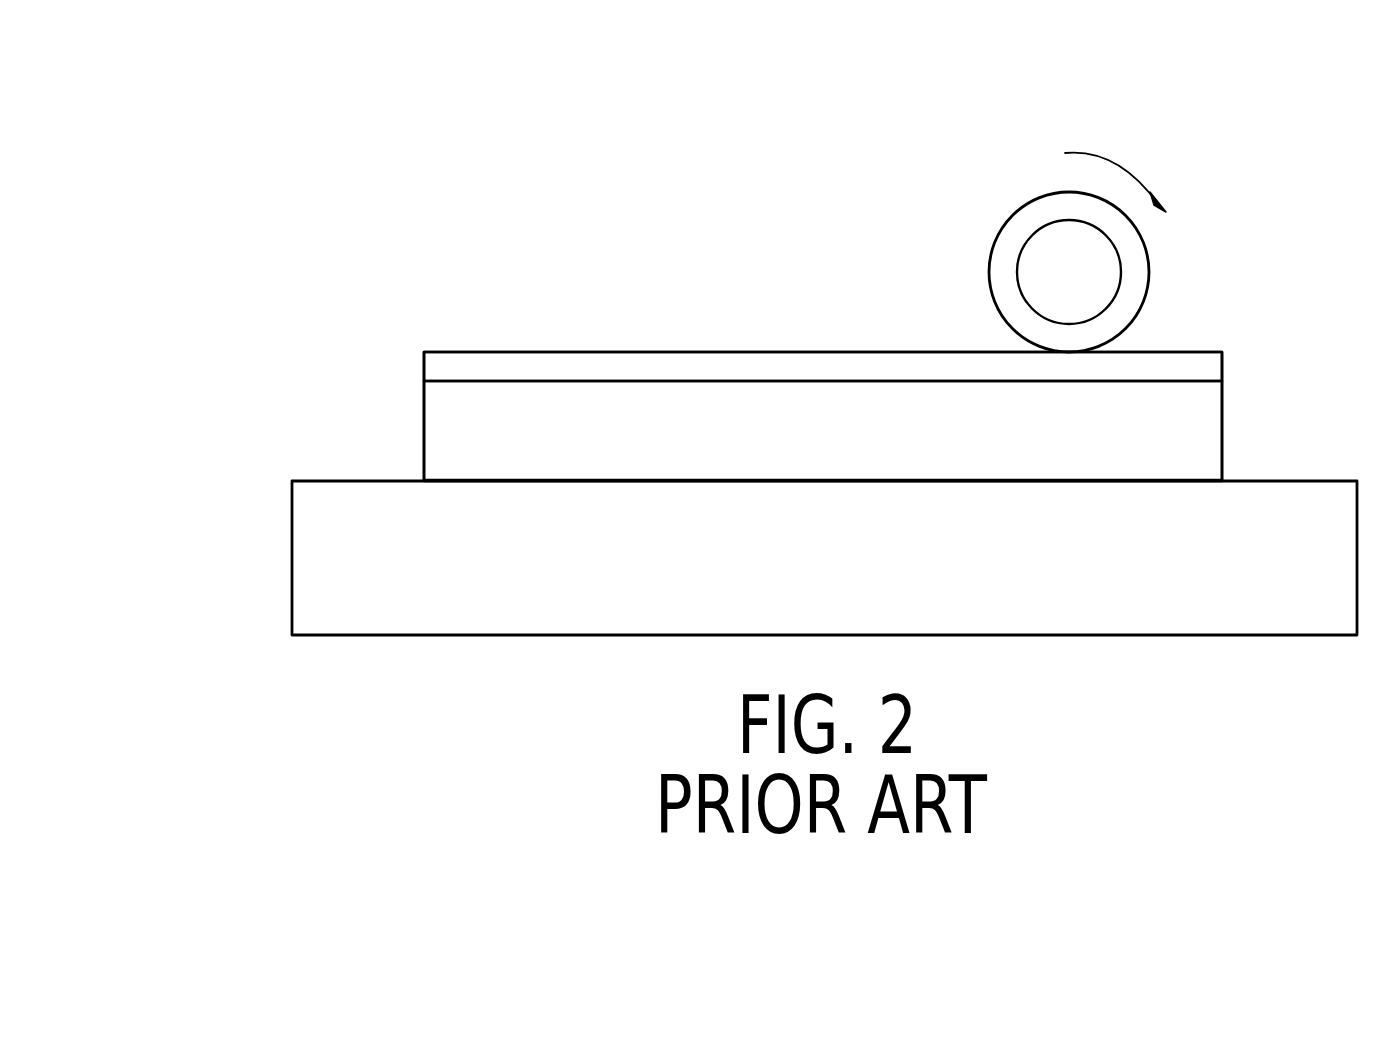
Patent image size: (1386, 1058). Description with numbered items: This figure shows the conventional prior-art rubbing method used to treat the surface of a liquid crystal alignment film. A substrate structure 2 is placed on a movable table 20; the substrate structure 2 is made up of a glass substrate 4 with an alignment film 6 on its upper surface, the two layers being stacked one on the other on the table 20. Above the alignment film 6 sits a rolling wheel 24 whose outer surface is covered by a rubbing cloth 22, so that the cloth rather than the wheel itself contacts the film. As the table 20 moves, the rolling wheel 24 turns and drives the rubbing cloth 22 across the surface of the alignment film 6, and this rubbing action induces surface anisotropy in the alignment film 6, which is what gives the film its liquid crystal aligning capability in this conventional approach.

The substrate structure 2 is at (227, 273).
The glass substrate 4 is at (445, 433).
The alignment film 6 is at (442, 365).
The movable table 20 is at (333, 578).
The rubbing cloth 22 is at (1030, 218).
The rolling wheel 24 is at (1102, 270).